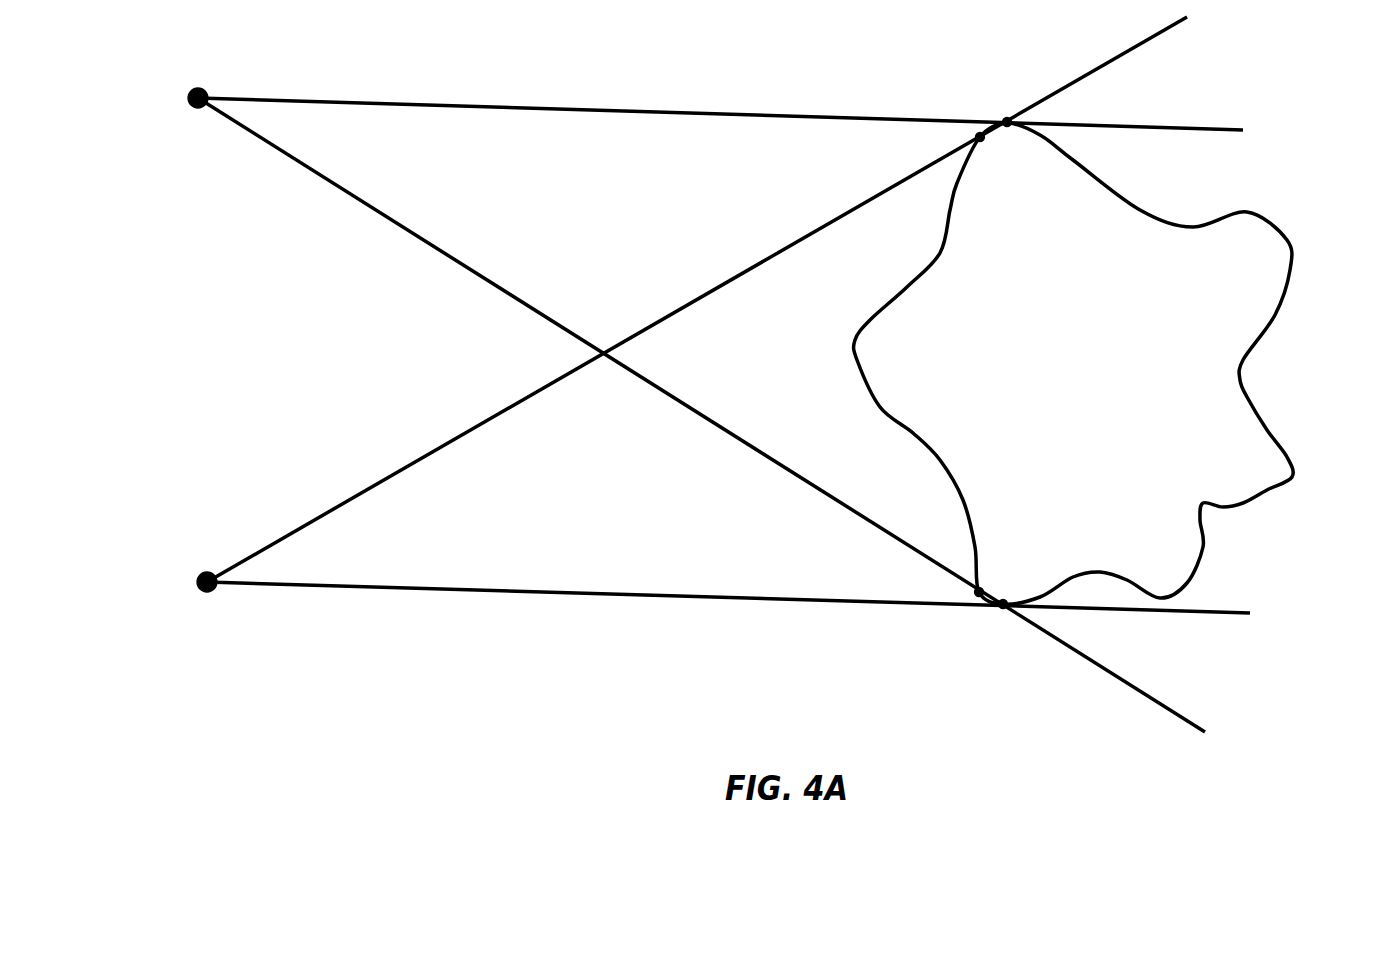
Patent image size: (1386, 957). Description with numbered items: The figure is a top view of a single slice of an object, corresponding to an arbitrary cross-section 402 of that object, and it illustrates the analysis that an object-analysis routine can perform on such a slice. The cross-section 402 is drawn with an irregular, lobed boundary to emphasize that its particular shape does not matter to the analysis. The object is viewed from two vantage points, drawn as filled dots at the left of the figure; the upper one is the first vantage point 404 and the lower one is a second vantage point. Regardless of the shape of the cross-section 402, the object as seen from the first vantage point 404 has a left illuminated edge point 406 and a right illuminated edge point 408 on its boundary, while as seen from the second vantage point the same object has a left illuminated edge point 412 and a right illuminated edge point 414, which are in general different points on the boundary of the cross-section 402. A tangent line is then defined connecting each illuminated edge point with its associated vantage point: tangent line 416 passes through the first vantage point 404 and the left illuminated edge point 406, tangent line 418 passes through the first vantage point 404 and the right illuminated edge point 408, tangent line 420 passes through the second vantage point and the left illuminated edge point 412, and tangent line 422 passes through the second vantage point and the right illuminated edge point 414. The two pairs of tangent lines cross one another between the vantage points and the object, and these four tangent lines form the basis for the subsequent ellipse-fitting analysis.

The cross-section 402 is at (1282, 228).
The first vantage point 404 is at (192, 91).
The left illuminated edge point 406 is at (1009, 119).
The right illuminated edge point 408 is at (976, 595).
The left illuminated edge point 412 is at (978, 134).
The right illuminated edge point 414 is at (1001, 607).
The tangent line 416 is at (366, 102).
The tangent line 418 is at (402, 230).
The tangent line 420 is at (387, 476).
The tangent line 422 is at (322, 585).